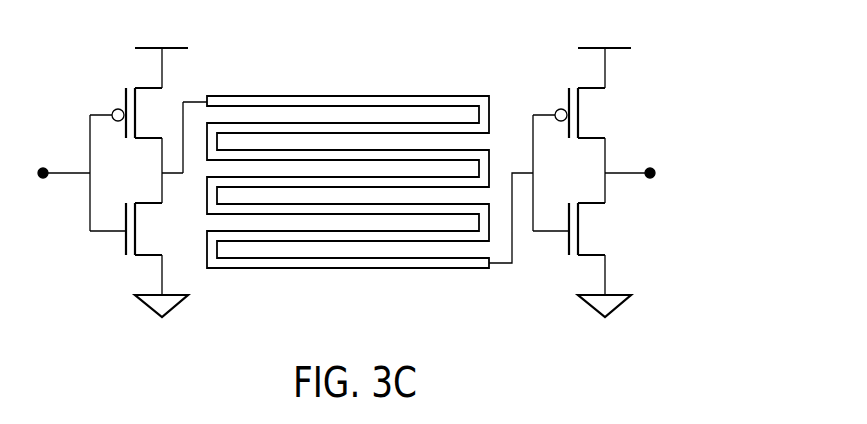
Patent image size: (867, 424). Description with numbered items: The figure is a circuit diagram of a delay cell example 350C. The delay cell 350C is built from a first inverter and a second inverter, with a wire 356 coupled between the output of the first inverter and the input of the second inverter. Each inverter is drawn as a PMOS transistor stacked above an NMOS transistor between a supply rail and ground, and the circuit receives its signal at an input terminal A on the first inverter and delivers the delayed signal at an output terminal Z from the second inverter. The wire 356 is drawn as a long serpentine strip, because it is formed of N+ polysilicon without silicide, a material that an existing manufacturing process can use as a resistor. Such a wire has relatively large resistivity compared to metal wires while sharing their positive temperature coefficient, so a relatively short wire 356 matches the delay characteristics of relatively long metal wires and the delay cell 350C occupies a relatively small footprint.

The wire 356 is at (238, 96).
The delay cell 350C is at (707, 66).
The input node A is at (62, 159).
The output node Z is at (633, 160).